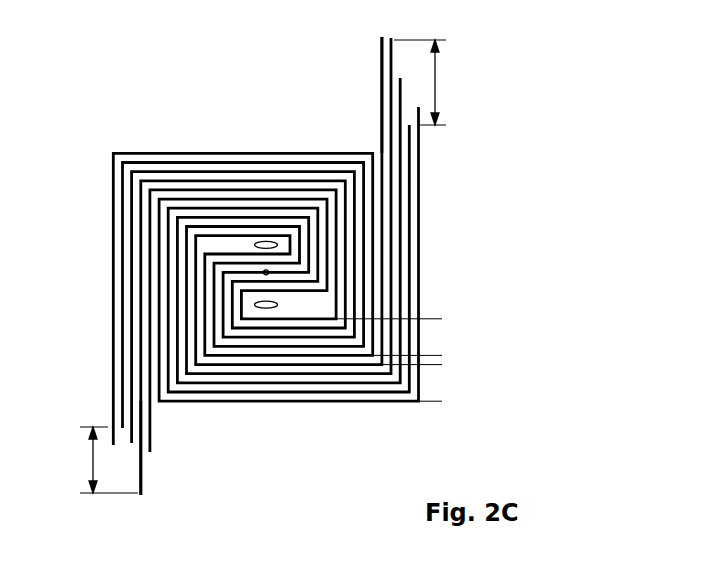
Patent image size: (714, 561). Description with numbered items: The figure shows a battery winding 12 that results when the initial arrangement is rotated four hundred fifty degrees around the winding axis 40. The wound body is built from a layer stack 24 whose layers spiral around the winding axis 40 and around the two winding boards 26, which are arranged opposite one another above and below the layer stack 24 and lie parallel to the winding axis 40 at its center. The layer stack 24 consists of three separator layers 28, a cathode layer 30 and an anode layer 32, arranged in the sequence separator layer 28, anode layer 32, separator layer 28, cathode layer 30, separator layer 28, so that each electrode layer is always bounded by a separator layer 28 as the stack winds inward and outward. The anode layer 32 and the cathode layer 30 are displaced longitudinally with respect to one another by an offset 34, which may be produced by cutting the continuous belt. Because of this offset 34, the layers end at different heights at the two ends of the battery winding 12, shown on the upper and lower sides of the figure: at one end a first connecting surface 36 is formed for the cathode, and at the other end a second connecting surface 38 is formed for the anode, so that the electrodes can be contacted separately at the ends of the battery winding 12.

The battery winding 12 is at (452, 183).
The layer stack 24 is at (444, 319).
The winding board 26 is at (266, 240).
The separator layer 28 is at (398, 99).
The cathode layer 30 is at (391, 236).
The anode layer 32 is at (410, 206).
The offset 34 is at (437, 82).
The first connecting surface 36 is at (381, 75).
The second connecting surface 38 is at (154, 453).
The winding axis 40 is at (268, 272).